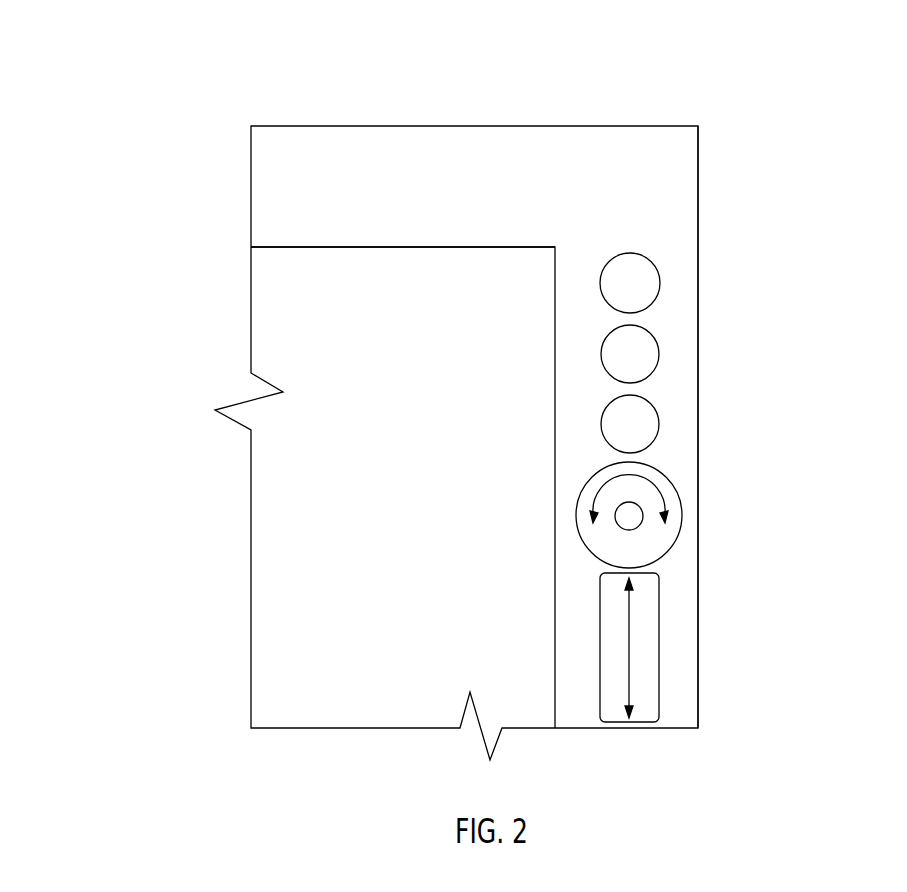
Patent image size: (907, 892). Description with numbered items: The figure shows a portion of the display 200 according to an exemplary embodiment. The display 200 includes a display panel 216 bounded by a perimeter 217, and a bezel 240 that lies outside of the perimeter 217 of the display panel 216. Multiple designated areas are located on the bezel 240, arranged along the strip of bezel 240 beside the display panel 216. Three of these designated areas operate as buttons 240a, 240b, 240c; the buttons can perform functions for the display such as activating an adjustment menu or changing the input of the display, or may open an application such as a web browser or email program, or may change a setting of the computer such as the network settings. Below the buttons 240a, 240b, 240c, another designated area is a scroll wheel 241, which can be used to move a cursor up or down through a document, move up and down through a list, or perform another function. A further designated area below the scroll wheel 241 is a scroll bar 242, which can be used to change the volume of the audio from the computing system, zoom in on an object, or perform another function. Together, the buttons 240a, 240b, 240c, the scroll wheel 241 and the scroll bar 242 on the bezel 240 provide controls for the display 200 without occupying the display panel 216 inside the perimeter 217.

The display 200 is at (715, 90).
The display panel 216 is at (355, 310).
The perimeter 217 is at (480, 247).
The bezel 240 is at (568, 183).
The button 240a is at (630, 283).
The button 240b is at (630, 354).
The button 240c is at (630, 424).
The scroll wheel 241 is at (632, 547).
The scroll bar 242 is at (638, 645).